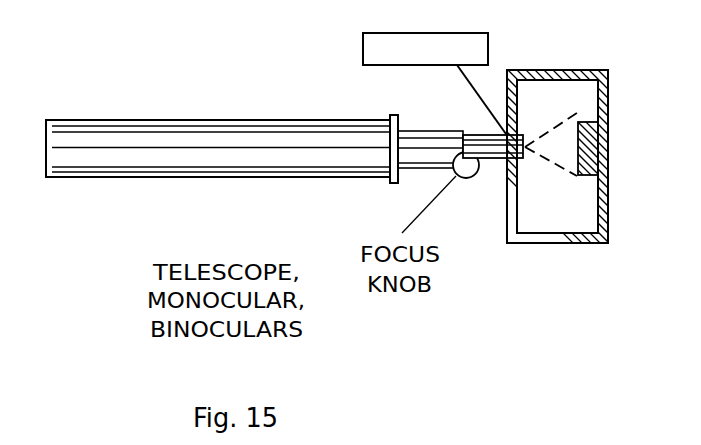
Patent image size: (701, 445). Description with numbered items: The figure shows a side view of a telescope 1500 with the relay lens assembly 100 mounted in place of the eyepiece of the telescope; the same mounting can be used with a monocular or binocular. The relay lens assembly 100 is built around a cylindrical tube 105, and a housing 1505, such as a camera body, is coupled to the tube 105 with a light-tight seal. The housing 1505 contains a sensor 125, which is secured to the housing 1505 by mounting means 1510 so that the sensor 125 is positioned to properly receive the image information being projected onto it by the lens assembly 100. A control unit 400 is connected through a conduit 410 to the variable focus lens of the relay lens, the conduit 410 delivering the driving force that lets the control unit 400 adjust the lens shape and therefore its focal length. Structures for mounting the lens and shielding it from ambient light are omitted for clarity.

The relay lens (RL) 100 is at (550, 157).
The cylindrical tube 105 is at (480, 133).
The sensor 125 is at (574, 180).
The control unit 400 is at (422, 33).
The conduit 410 is at (475, 91).
The telescope 1500 is at (227, 250).
The housing 1505 is at (558, 70).
The mounting means 1510 is at (592, 120).